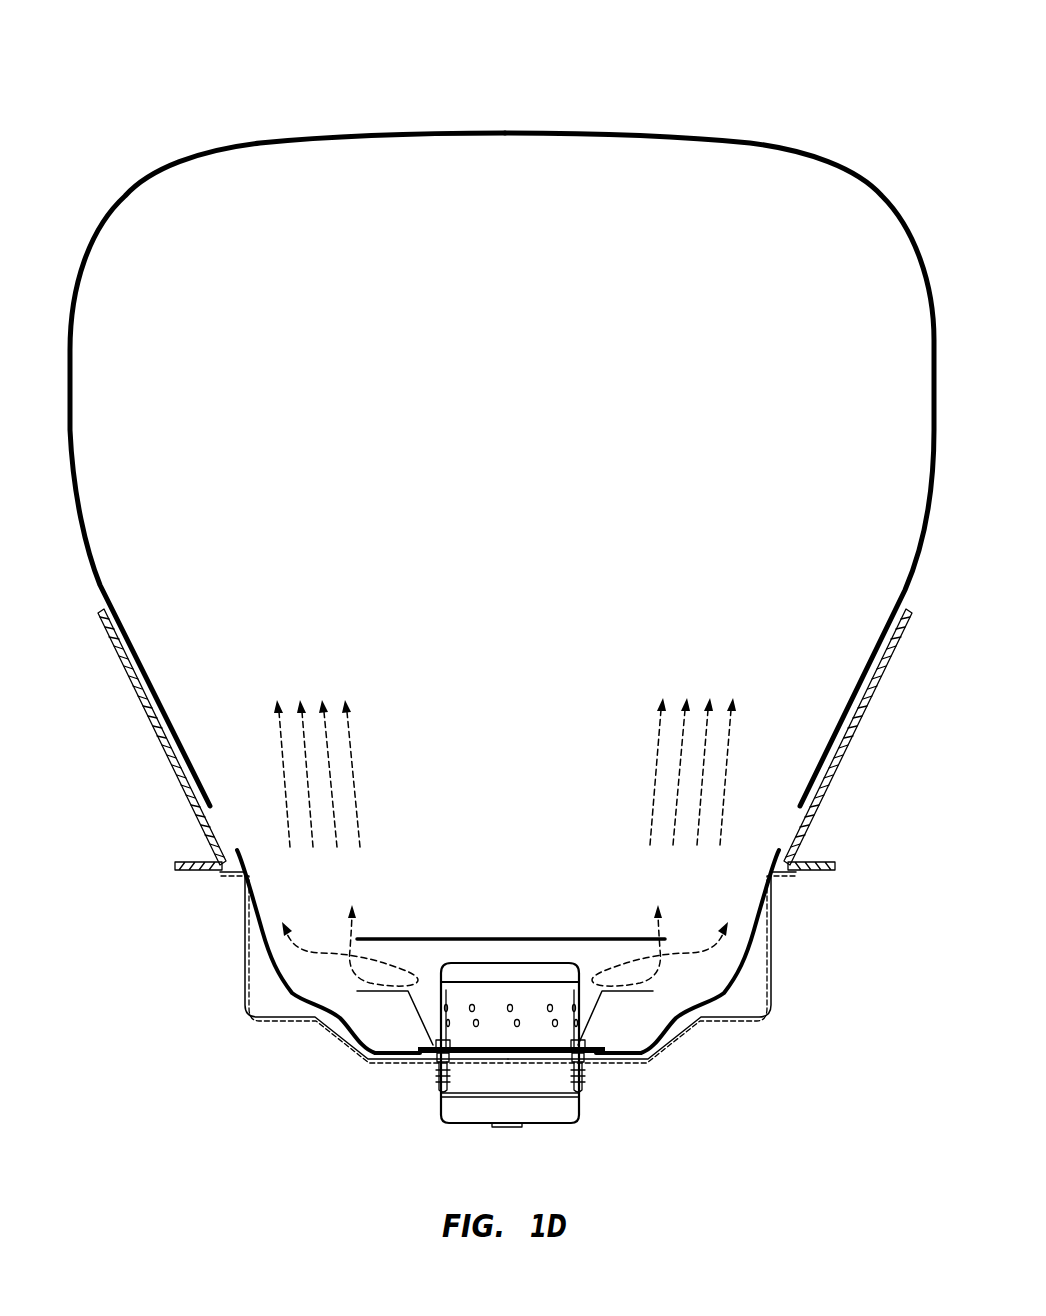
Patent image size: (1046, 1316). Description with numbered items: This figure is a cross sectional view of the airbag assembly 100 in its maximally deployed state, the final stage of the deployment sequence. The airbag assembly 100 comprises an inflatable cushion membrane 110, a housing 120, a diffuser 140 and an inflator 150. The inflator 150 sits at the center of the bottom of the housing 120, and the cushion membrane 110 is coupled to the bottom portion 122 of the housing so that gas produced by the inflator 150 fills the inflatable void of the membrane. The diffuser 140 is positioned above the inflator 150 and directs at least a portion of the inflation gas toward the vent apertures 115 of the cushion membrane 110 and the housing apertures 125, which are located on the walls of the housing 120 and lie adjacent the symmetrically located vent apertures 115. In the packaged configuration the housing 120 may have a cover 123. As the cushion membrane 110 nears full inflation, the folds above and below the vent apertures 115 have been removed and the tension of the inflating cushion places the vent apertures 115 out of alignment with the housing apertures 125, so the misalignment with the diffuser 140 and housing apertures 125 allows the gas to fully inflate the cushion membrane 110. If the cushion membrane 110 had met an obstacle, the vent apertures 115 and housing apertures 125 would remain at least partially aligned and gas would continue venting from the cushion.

The airbag assembly 100 is at (722, 82).
The inflatable cushion membrane 110 is at (745, 143).
The vent aperture 115 is at (222, 828).
The housing 120 is at (733, 1023).
The bottom portion 122 is at (395, 1063).
The cover 123 is at (170, 756).
The housing aperture 125 is at (250, 997).
The diffuser 140 is at (552, 938).
The inflator 150 is at (493, 1035).